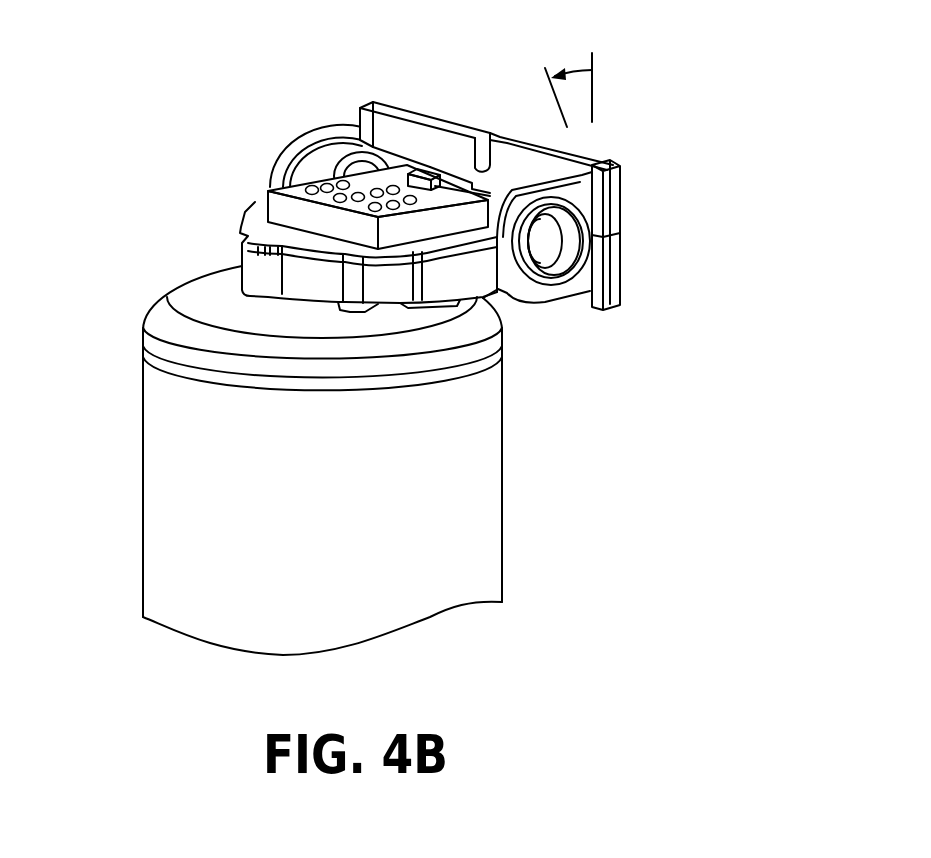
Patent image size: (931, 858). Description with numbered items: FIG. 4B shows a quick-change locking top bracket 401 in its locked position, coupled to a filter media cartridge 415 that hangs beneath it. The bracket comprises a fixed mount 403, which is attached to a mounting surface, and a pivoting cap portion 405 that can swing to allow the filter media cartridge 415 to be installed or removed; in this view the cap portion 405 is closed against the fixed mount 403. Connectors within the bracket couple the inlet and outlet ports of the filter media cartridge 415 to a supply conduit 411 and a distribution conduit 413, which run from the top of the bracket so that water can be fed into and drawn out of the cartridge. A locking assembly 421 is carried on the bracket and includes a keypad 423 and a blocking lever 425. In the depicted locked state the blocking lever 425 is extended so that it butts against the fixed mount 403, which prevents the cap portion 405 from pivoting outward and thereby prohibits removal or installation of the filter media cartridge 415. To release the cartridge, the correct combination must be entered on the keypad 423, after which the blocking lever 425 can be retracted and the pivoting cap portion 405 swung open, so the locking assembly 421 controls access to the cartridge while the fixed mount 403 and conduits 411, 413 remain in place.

The quick-change locking top bracket 401 is at (297, 72).
The fixed mount 403 is at (405, 123).
The pivoting cap portion 405 is at (242, 252).
The supply conduit 411 is at (283, 153).
The distribution conduit 413 is at (549, 258).
The filter media cartridge 415 is at (155, 461).
The locking assembly 421 is at (278, 208).
The keypad 423 is at (440, 207).
The blocking lever 425 is at (452, 168).